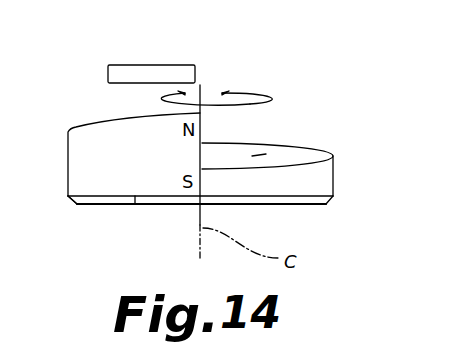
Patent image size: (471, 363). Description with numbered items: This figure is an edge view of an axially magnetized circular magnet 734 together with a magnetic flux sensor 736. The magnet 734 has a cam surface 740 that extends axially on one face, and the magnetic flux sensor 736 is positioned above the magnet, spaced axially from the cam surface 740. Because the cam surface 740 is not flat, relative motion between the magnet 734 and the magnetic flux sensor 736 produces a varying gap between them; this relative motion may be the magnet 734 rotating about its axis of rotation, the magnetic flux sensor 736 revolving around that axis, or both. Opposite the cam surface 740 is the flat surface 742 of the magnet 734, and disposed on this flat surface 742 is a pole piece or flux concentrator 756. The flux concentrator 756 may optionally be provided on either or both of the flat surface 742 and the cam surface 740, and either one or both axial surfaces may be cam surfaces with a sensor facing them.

The magnet 734 is at (335, 170).
The magnetic flux sensor 736 is at (148, 63).
The cam surface 740 is at (258, 155).
The flat surface 742 is at (135, 204).
The flux concentrator 756 is at (88, 205).